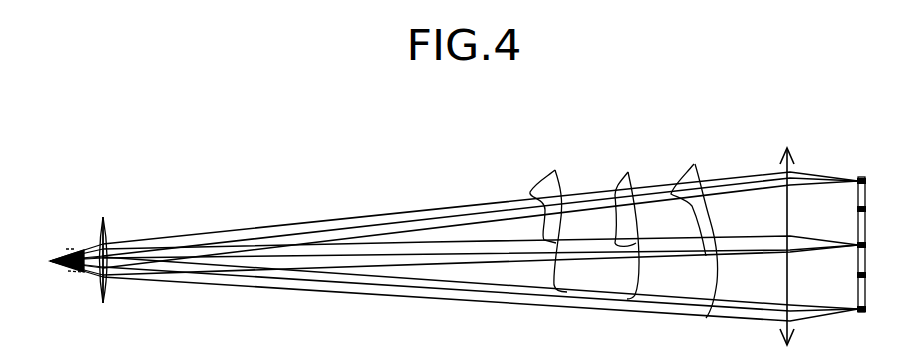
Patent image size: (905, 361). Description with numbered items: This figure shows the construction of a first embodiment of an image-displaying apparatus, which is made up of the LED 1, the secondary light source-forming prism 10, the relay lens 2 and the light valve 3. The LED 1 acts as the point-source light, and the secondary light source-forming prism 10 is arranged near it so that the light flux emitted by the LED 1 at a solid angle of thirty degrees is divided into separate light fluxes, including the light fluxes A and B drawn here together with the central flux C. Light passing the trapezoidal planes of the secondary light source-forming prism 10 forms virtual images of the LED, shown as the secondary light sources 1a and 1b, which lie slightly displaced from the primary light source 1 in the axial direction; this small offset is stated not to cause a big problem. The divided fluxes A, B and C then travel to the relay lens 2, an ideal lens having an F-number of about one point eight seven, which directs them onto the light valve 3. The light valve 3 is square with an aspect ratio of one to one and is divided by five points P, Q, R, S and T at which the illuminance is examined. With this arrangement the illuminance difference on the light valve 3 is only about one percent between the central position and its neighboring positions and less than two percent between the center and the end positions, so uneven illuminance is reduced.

The LED 1 is at (49, 263).
The secondary light source 1a is at (70, 249).
The secondary light source 1b is at (69, 272).
The secondary light source-forming prism 10 is at (109, 236).
The relay lens 2 is at (790, 203).
The light valve 3 is at (861, 172).
The light flux A is at (548, 221).
The light flux B is at (694, 231).
The wavefront C is at (627, 226).